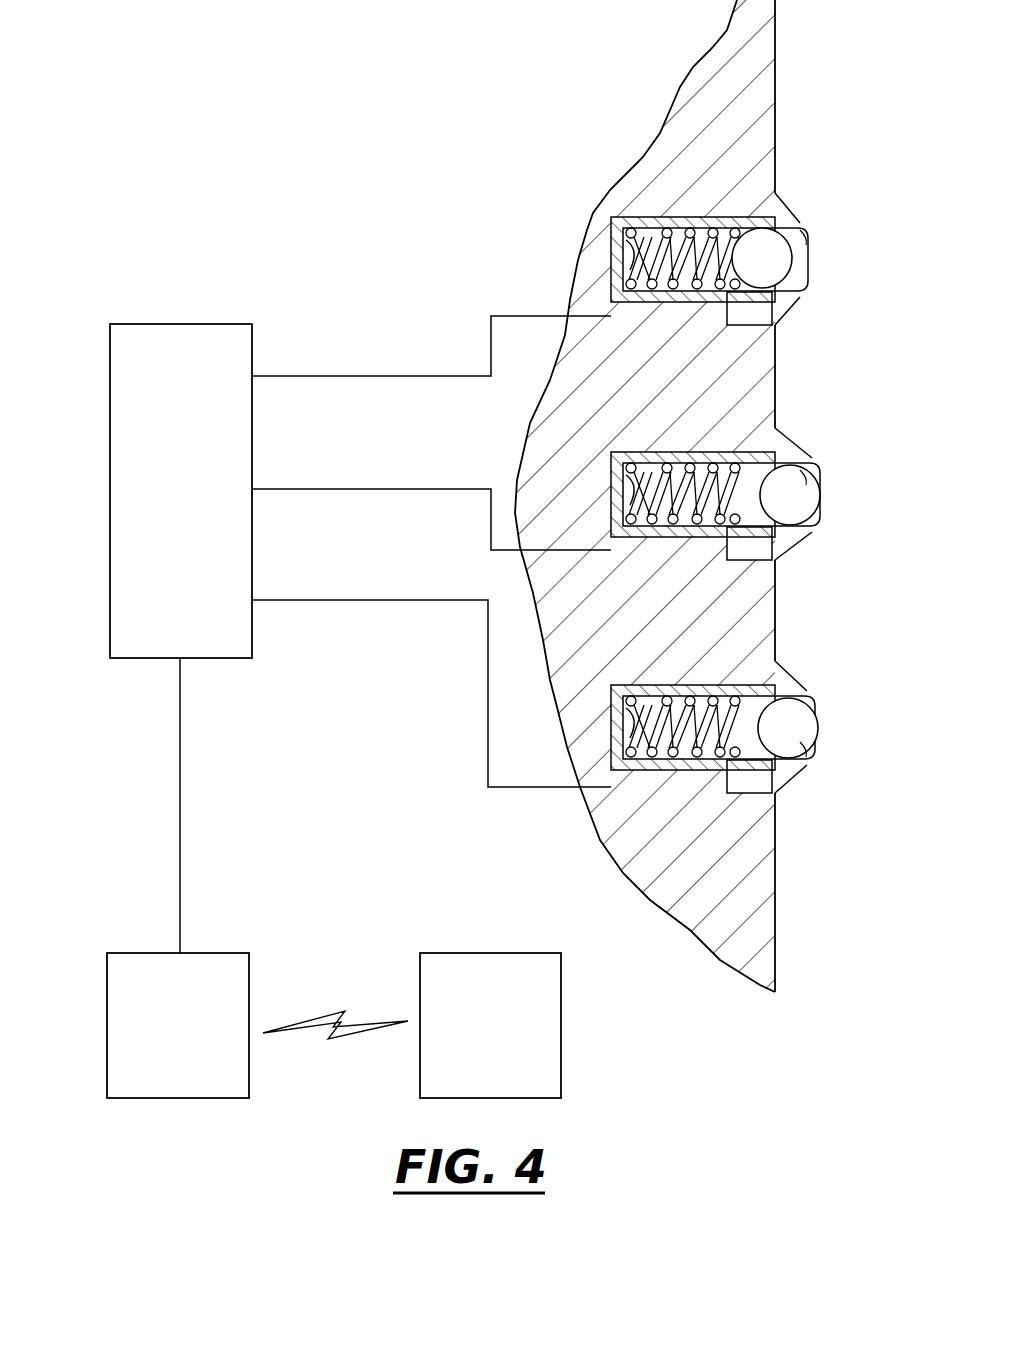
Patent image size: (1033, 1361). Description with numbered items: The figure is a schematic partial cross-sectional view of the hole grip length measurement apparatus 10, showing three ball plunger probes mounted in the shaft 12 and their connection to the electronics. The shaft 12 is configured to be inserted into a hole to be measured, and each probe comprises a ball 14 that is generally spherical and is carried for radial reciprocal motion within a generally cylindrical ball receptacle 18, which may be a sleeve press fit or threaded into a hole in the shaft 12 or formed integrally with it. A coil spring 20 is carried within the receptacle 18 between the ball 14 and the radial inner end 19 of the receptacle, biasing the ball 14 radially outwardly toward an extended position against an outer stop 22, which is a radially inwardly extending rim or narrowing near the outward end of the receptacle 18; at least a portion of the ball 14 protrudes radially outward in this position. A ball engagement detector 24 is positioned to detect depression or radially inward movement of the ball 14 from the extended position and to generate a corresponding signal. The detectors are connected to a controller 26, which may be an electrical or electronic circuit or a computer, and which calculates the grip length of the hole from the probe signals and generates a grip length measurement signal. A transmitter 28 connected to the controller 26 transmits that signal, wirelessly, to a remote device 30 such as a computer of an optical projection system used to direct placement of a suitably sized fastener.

The hole grip length measurement apparatus 10 is at (518, 105).
The shaft 12 is at (735, 122).
The ball 14 is at (763, 257).
The ball receptacle 18 is at (617, 291).
The radial inner end 19 is at (637, 258).
The coil spring 20 is at (662, 253).
The outer stop 22 is at (802, 238).
The ball engagement detector 24 is at (750, 308).
The controller 26 is at (167, 540).
The transmitter 28 is at (203, 1065).
The remote device 30 is at (520, 1035).